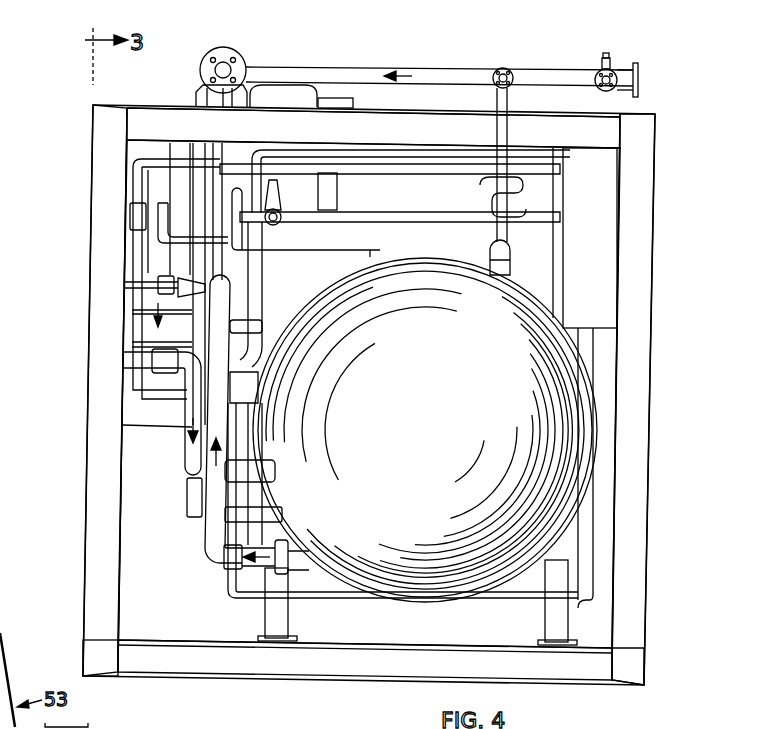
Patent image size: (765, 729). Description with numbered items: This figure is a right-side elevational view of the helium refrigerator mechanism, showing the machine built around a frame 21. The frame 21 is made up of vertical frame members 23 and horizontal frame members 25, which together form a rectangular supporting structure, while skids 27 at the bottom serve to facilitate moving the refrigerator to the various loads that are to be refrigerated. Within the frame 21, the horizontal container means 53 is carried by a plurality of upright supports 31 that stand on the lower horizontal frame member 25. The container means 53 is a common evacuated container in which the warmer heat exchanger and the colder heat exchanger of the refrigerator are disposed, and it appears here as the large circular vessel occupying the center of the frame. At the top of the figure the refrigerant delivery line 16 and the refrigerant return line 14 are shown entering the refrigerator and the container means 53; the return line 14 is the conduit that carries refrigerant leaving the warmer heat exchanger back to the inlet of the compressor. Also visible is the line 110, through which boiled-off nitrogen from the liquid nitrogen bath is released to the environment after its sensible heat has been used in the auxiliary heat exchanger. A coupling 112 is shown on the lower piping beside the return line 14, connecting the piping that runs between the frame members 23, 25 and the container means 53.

The refrigerant return line 14 is at (209, 56).
The refrigerant delivery line 16 is at (612, 66).
The frame 21 is at (661, 196).
The vertical frame members 23 is at (95, 344).
The horizontal frame members 25 is at (388, 126).
The skids 27 is at (95, 648).
The upright supports 31 is at (290, 626).
The container means 53 is at (548, 451).
The line 110 is at (500, 67).
The pipe coupling 112 is at (187, 507).